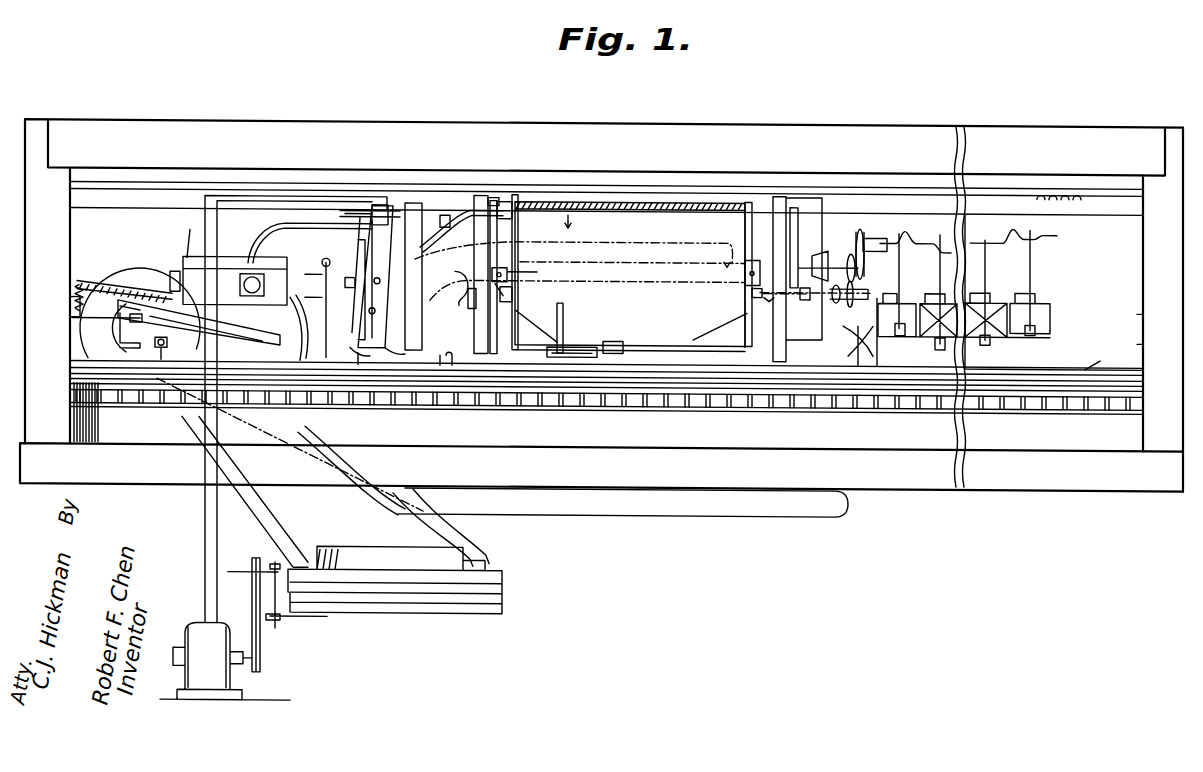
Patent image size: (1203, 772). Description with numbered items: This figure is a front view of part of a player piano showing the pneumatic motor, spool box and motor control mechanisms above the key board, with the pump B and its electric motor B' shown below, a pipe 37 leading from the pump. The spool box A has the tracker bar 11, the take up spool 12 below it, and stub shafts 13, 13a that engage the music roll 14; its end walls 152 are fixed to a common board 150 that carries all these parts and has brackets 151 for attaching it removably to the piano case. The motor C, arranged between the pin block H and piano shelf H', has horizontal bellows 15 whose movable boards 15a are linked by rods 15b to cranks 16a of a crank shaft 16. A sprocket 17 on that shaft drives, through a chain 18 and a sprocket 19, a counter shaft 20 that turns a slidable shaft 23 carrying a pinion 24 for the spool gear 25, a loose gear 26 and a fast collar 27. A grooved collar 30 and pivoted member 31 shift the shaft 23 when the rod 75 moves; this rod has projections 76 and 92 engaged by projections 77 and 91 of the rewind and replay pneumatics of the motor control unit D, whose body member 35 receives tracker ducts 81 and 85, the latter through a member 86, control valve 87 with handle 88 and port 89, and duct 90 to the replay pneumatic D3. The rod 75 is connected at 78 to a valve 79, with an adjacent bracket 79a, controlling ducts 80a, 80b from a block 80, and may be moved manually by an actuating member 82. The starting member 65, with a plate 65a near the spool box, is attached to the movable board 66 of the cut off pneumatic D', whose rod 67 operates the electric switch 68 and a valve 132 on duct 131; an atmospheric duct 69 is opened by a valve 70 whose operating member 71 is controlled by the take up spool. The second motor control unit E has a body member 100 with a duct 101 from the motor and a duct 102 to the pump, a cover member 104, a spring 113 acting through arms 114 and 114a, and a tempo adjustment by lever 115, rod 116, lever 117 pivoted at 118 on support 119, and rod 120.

The tracker bar 11 is at (515, 264).
The take up spool 12 is at (510, 385).
The stub shaft 13 is at (758, 210).
The stub shaft 13a is at (492, 200).
The music roll 14 is at (745, 200).
The bellows 15 is at (895, 290).
The movable board 15a is at (934, 339).
The rod 15b is at (1035, 275).
The crank shaft 16 is at (982, 236).
The crank 16a is at (1057, 233).
The sprocket 17 is at (862, 222).
The chain 18 is at (880, 254).
The sprocket 19 is at (815, 281).
The counter shaft 20 is at (825, 252).
The slidably mounted shaft 23 is at (775, 330).
The pinion 24 is at (752, 286).
The gear 25 is at (762, 299).
The gear 26 is at (835, 345).
The collar 27 is at (790, 345).
The grooved collar 30 is at (858, 338).
The pivoted member 31 is at (860, 345).
The body member 35 is at (372, 250).
The pipe 37 is at (485, 552).
The starting member 65 is at (447, 212).
The plate 65a is at (508, 205).
The movable board 66 is at (461, 231).
The rod 67 is at (415, 205).
The electric switch 68 is at (384, 199).
The atmospheric duct 69 is at (405, 290).
The valve 70 is at (576, 340).
The operating member 71 is at (575, 328).
The longitudinally movable rod 75 is at (825, 345).
The projection 76 is at (430, 365).
The projection 77 is at (455, 360).
The connection 78 is at (186, 348).
The valve 79 is at (140, 313).
The bracket 79a is at (163, 286).
The block 80 is at (140, 375).
The air duct 80a is at (120, 370).
The second duct 80b is at (175, 375).
The tracker duct 81 is at (677, 253).
The actuating member 82 is at (615, 344).
The tracker duct 85 is at (490, 245).
The member 86 is at (495, 285).
The control valve 87 is at (452, 337).
The handle 88 is at (519, 298).
The port 89 is at (535, 262).
The duct 90 is at (454, 301).
The projection 91 is at (300, 372).
The projection 92 is at (330, 375).
The body member 100 is at (199, 322).
The duct 101 is at (705, 516).
The duct 102 is at (284, 504).
The cover member 104 is at (267, 235).
The spring 113 is at (95, 283).
The arm 114 is at (75, 330).
The arm 114a is at (75, 283).
The manually operable lever 115 is at (695, 316).
The longitudinally movable rod 116 is at (635, 422).
The lever 117 is at (313, 296).
The pivot 118 is at (307, 436).
The fixed support 119 is at (265, 375).
The rod 120 is at (313, 307).
The duct 131 is at (310, 243).
The valve 132 is at (430, 193).
The common board 150 is at (197, 446).
The bracket 151 is at (1079, 314).
The end wall 152 is at (487, 188).
The spool box A is at (787, 215).
The pump B is at (395, 569).
The electric motor B' is at (243, 628).
The motor C is at (910, 336).
The motor control unit D is at (394, 190).
The cut off pneumatic D' is at (437, 210).
The replay pneumatic D3 is at (430, 300).
The second motor control unit E is at (292, 327).
The pin block H is at (1054, 260).
The piano shelf H' is at (1090, 357).